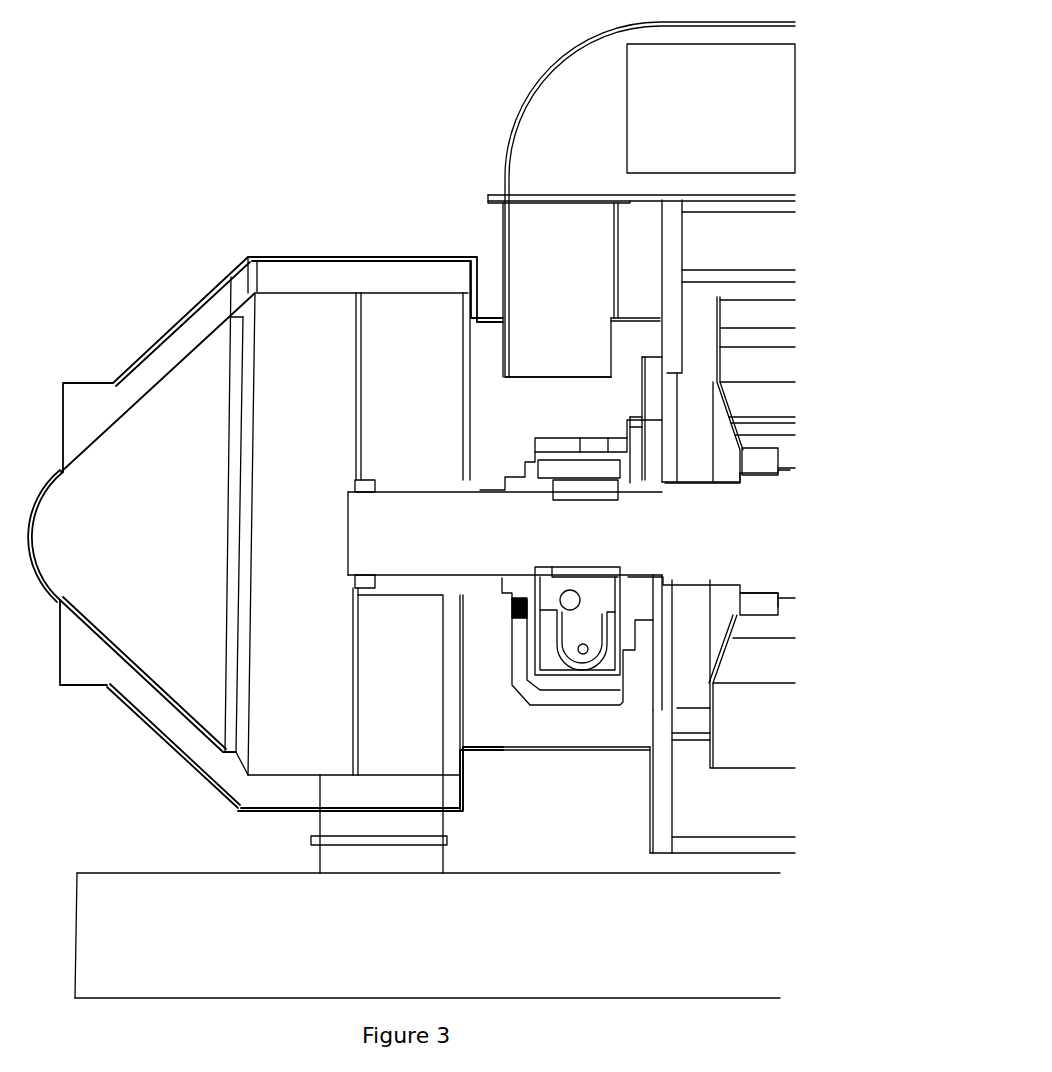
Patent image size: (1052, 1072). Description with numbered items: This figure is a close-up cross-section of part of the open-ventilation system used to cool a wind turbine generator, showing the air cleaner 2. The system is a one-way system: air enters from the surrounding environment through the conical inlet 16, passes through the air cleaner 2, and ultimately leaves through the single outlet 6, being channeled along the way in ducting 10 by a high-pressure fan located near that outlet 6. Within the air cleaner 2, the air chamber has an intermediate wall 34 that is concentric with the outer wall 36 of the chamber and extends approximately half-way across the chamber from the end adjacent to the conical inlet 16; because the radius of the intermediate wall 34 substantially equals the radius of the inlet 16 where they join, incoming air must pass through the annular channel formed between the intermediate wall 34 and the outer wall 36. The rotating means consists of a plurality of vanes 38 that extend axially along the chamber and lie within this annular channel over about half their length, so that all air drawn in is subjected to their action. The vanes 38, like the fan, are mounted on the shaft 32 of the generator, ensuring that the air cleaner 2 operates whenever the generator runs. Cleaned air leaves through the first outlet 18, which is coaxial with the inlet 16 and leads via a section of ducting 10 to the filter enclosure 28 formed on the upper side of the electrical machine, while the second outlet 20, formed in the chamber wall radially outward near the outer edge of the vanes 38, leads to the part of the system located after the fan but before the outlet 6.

The air cleaner 2 is at (258, 251).
The outlet 6 is at (75, 917).
The ducting 10 is at (528, 226).
The conical inlet 16 is at (137, 378).
The first outlet 18 is at (478, 410).
The second outlet 20 is at (335, 856).
The filter enclosure 28 is at (590, 118).
The shaft 32 is at (475, 548).
The intermediate wall 34 is at (286, 300).
The outer wall 36 is at (300, 256).
The vanes 38 is at (342, 278).